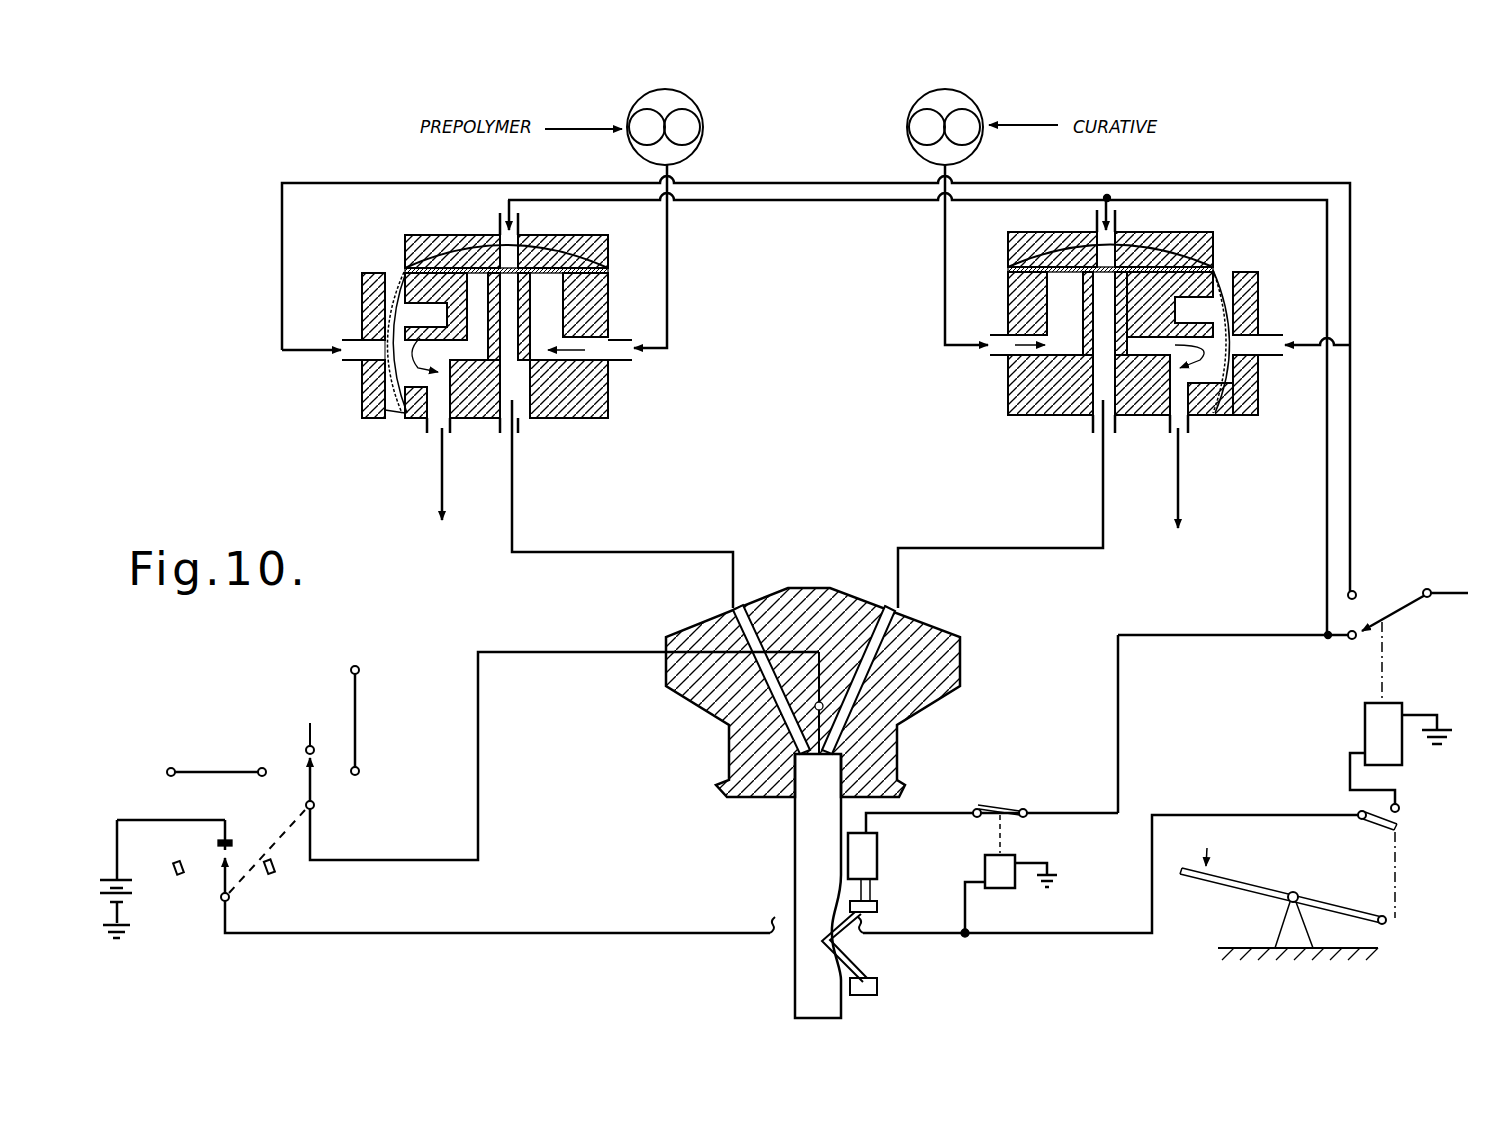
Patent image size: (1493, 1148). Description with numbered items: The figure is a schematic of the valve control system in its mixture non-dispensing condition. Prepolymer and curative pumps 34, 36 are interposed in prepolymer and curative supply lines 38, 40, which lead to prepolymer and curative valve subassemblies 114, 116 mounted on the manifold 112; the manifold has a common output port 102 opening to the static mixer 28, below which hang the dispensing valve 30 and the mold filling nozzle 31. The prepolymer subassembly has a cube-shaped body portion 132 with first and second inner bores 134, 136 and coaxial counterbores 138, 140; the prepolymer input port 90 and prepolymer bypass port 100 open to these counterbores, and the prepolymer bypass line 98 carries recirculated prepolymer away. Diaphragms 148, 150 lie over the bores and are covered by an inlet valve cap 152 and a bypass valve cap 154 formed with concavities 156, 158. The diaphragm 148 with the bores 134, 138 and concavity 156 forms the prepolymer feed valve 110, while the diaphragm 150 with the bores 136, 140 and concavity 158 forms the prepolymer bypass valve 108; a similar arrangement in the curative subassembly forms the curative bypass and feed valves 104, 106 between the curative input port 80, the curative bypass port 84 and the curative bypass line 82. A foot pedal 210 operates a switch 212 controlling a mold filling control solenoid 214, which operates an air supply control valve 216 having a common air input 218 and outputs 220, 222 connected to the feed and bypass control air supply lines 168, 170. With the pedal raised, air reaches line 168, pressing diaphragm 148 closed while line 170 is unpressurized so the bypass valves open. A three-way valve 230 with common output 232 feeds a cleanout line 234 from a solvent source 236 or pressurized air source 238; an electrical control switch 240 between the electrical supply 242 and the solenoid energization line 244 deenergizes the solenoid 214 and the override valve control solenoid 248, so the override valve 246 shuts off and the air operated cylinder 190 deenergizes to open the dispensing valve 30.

The static mixer 28 is at (811, 852).
The dispensing valve assembly 30 is at (872, 958).
The mold filling nozzle 31 is at (793, 996).
The prepolymer pump 34 is at (703, 128).
The curative pump 36 is at (906, 120).
The prepolymer supply line 38 is at (582, 126).
The curative supply line 40 is at (1035, 123).
The curative input port 80 is at (1027, 333).
The curative bypass line 82 is at (1186, 485).
The curative bypass port 84 is at (1162, 420).
The prepolymer input port 90 is at (608, 380).
The prepolymer bypass line 98 is at (437, 497).
The prepolymer bypass port 100 is at (467, 420).
The common output port 102 is at (808, 782).
The curative bypass valve 104 is at (1215, 272).
The curative feed valve 106 is at (1068, 256).
The prepolymer bypass valve 108 is at (381, 310).
The prepolymer feed valve 110 is at (523, 258).
The manifold 112 is at (806, 592).
The prepolymer valve subassembly 114 is at (505, 405).
The curative valve subassembly 116 is at (1094, 406).
The body portion 132 is at (595, 418).
The first inner bore 134 is at (546, 418).
The second inner bore 136 is at (372, 372).
The first counterbore 138 is at (480, 278).
The second counterbore 140 is at (420, 313).
The diaphragm 148 is at (560, 270).
The diaphragm 150 is at (372, 396).
The inlet valve cap 152 is at (404, 241).
The bypass valve cap 154 is at (372, 282).
The concavity 156 is at (443, 260).
The concavity 158 is at (383, 326).
The feed control air supply line 168 is at (603, 199).
The bypass control air supply line 170 is at (282, 296).
The air operated cylinder 190 is at (878, 840).
The foot pedal 210 is at (1232, 887).
The switch 212 is at (1400, 818).
The mold filling control solenoid 214 is at (1365, 712).
The air supply control valve 216 is at (1410, 612).
The common air input 218 is at (1432, 597).
The first output 220 is at (1355, 642).
The second output 222 is at (1358, 592).
The 3-way valve 230 is at (333, 796).
The common output 232 is at (318, 810).
The cleanout line 234 is at (417, 861).
The solvent source 236 is at (360, 670).
The pressurized air source 238 is at (176, 768).
The electrical control switch 240 is at (208, 890).
The electrical supply 242 is at (108, 888).
The solenoid energization line 244 is at (340, 930).
The override valve 246 is at (1000, 805).
The override valve control solenoid 248 is at (985, 863).